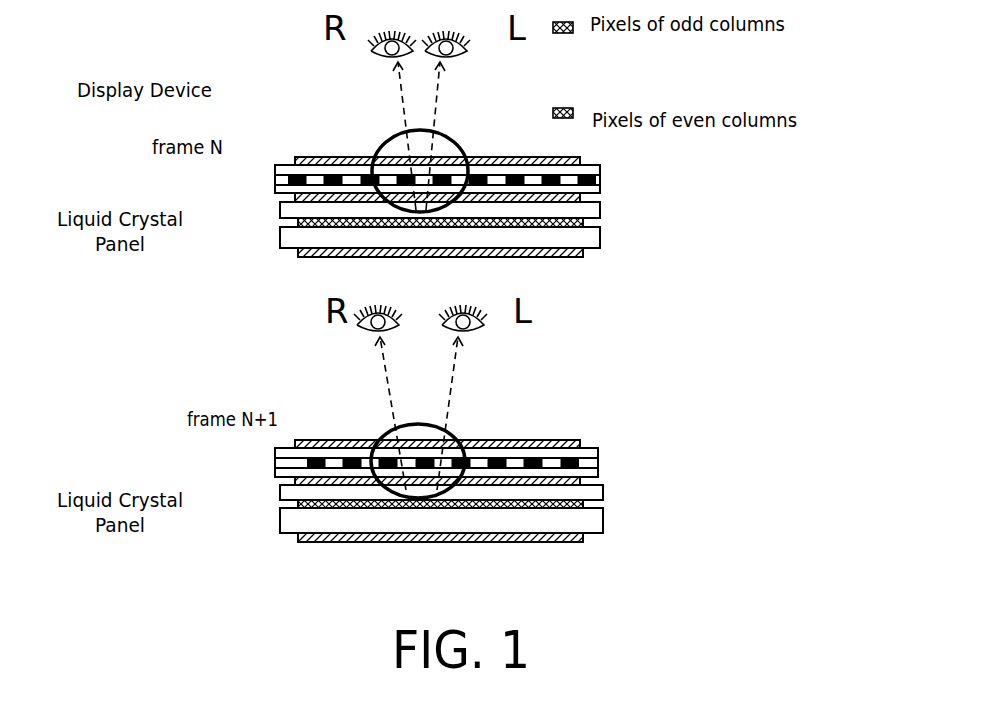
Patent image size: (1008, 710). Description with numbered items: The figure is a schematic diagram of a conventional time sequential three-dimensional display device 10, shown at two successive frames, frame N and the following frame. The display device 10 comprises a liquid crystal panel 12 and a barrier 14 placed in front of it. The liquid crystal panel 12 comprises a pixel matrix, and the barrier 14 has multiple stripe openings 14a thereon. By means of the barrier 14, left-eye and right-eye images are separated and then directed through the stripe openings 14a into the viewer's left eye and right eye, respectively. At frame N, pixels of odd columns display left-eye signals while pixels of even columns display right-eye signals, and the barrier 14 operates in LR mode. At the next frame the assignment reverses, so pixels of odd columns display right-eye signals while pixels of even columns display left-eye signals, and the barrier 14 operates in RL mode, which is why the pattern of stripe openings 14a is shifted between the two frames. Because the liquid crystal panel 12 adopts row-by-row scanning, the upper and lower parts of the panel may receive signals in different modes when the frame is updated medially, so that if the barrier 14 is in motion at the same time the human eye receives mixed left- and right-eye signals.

The time sequential 3D display device 10 is at (277, 142).
The liquid crystal panel 12 is at (267, 203).
The barrier 14 is at (592, 180).
The stripe openings 14a is at (533, 180).